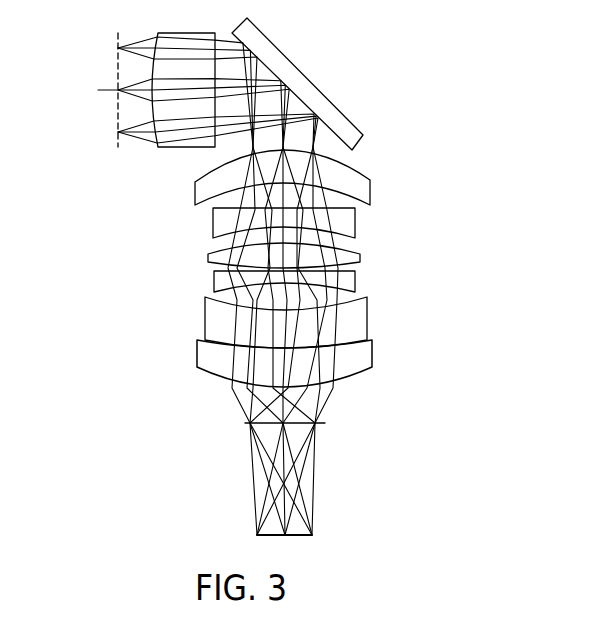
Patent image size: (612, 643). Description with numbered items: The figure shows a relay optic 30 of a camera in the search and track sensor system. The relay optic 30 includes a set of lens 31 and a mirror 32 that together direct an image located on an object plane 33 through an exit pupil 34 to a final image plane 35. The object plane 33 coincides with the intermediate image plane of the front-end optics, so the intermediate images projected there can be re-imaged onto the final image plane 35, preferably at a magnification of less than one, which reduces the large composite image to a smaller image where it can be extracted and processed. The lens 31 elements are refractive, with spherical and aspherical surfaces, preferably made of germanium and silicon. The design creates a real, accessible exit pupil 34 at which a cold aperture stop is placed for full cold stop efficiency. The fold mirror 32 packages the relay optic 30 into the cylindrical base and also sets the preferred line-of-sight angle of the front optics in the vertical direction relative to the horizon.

The relay optic 30 is at (267, 313).
The lens 31 is at (196, 202).
The mirror 32 is at (280, 58).
The object plane 33 is at (78, 101).
The exit pupil 34 is at (318, 406).
The final image plane 35 is at (309, 571).